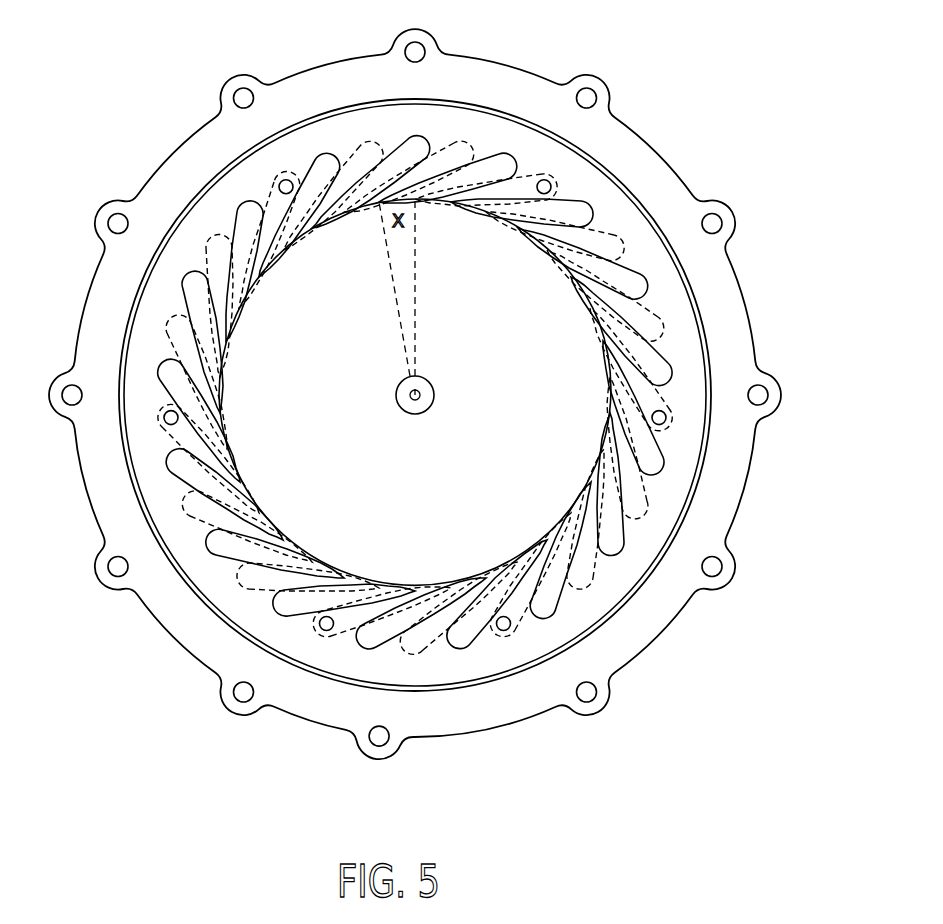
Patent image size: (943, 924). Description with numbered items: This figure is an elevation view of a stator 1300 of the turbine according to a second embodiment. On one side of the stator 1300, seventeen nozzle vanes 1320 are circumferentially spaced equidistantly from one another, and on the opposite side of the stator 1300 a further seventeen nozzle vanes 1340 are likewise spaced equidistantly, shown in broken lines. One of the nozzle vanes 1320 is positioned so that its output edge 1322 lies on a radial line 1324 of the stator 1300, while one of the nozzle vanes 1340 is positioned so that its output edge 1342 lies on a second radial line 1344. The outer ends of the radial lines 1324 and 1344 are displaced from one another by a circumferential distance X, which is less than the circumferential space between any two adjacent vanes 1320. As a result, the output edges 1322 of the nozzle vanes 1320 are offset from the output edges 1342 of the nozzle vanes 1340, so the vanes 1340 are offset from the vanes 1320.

The stator 1300 is at (204, 126).
The nozzle vanes 1320 is at (318, 158).
The output edge 1322 is at (417, 201).
The radial line 1324 is at (417, 348).
The nozzle vanes 1340 is at (472, 146).
The output edge 1342 is at (380, 206).
The radial line 1344 is at (405, 337).